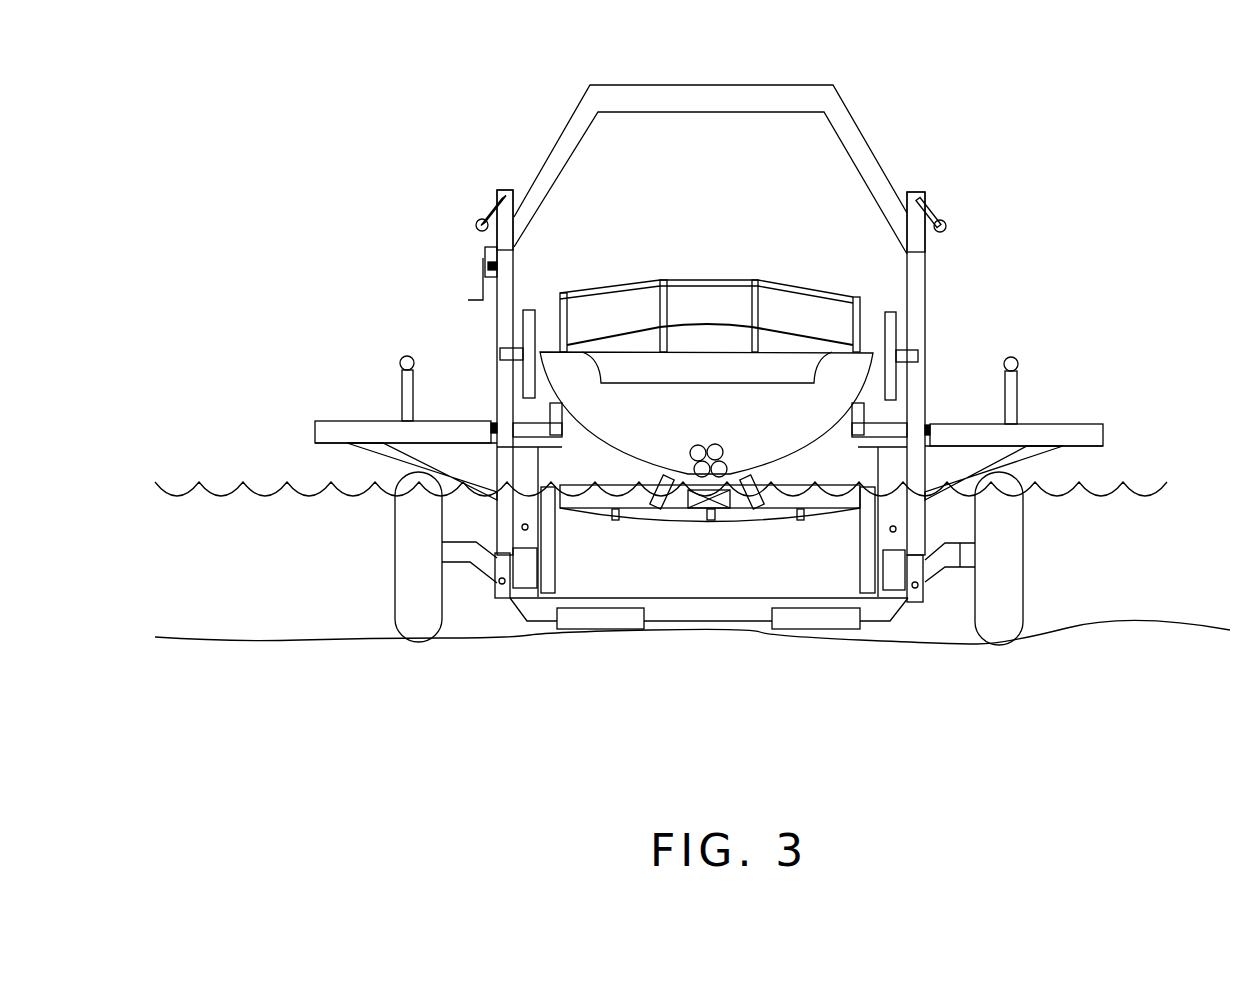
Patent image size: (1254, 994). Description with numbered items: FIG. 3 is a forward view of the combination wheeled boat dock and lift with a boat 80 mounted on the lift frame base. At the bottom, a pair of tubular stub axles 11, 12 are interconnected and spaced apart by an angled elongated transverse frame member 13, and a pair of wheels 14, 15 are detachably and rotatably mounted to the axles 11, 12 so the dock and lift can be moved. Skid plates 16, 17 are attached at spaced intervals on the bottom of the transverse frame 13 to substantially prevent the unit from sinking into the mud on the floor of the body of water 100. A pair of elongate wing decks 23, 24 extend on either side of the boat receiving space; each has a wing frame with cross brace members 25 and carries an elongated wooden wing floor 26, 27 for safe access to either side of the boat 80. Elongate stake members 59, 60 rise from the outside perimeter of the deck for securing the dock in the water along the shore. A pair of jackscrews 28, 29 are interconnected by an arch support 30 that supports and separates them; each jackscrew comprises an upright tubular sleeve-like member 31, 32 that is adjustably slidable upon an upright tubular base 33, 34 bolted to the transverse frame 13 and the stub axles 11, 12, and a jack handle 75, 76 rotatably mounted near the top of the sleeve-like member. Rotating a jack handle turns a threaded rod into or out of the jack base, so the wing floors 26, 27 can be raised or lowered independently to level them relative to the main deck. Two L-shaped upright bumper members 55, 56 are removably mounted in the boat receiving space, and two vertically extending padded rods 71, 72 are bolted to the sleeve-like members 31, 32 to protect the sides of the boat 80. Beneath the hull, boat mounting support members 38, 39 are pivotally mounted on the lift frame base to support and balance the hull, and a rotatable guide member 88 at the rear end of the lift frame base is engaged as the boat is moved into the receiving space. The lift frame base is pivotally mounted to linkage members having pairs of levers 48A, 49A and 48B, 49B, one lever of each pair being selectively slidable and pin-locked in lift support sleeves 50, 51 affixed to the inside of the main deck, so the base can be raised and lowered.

The tubular stub axle 11 is at (470, 565).
The tubular stub axle 12 is at (960, 568).
The transverse frame member 13 is at (708, 622).
The wheel 14 is at (394, 580).
The wheel 15 is at (1024, 578).
The skid plate 16 is at (603, 629).
The skid plate 17 is at (815, 629).
The wing deck 23 is at (315, 435).
The wing deck 24 is at (1103, 447).
The cross brace member 25 is at (378, 462).
The wing floor 26 is at (340, 421).
The wing floor 27 is at (1050, 424).
The jackscrew 28 is at (936, 192).
The jackscrew 29 is at (486, 192).
The arch support 30 is at (762, 86).
The sleeve-like member 31 is at (927, 324).
The sleeve-like member 32 is at (496, 318).
The tubular base 33 is at (504, 600).
The tubular base 34 is at (918, 603).
The boat mounting support member 38 is at (648, 471).
The boat mounting support member 39 is at (765, 473).
The lever 48A is at (522, 565).
The lever 48B is at (895, 565).
The lever 49A is at (556, 548).
The lever 49B is at (860, 548).
The lift support sleeve 50 is at (522, 468).
The lift support sleeve 51 is at (900, 471).
The upright bumper member 55 is at (545, 310).
The upright bumper member 56 is at (884, 312).
The stake member 59 is at (400, 403).
The stake member 60 is at (1020, 395).
The padded rod 71 is at (563, 414).
The padded rod 72 is at (852, 414).
The jack handle 75 is at (947, 226).
The jack handle 76 is at (476, 225).
The boat 80 is at (688, 280).
The guide member 88 is at (721, 520).
The water level 100 is at (1122, 490).